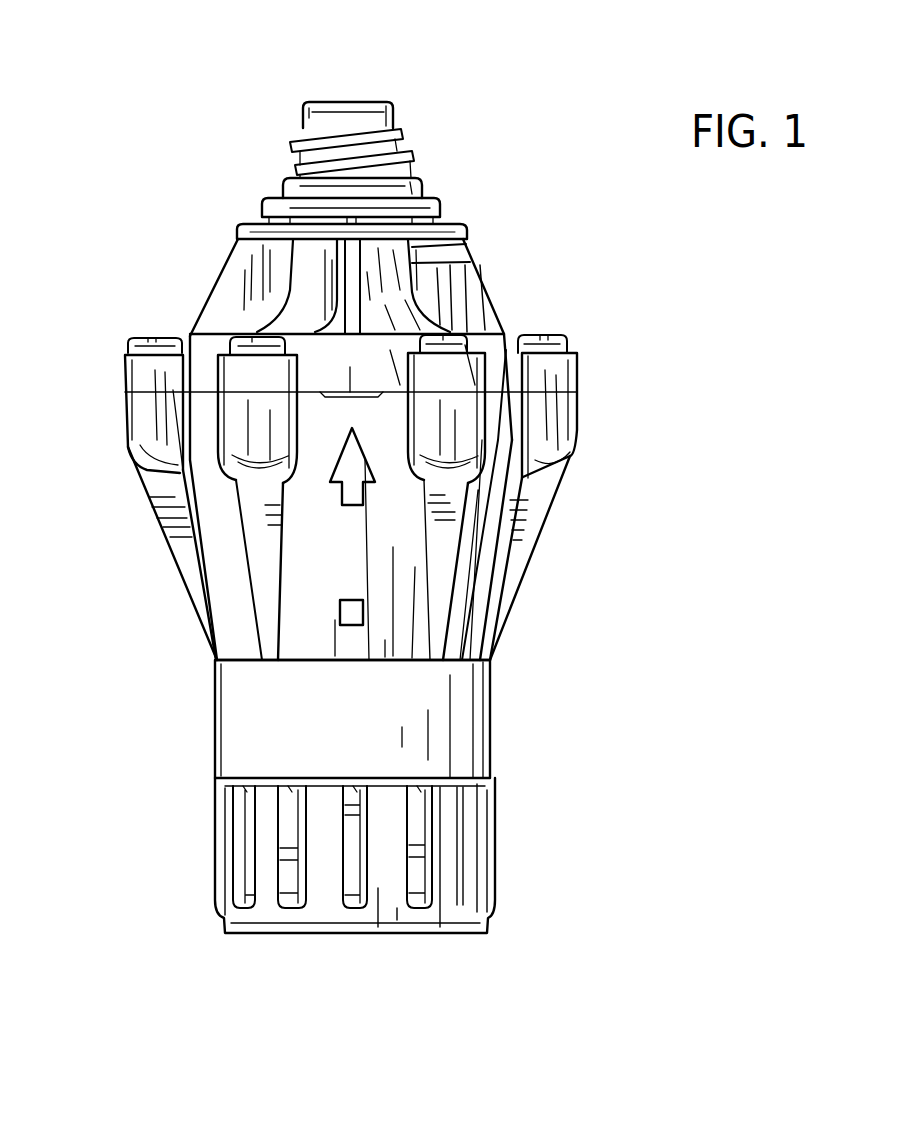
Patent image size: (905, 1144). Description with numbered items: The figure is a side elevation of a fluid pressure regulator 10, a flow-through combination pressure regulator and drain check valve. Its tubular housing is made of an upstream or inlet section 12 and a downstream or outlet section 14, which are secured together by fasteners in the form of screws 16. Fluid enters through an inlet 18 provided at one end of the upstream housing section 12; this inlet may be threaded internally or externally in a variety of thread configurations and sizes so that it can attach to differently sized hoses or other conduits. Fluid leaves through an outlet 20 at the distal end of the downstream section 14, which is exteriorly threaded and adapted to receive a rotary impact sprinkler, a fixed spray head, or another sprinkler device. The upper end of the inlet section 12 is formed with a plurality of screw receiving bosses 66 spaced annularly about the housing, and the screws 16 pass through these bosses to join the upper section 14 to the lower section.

The fluid pressure regulator 10 is at (497, 118).
The upstream or inlet section 12 is at (509, 616).
The downstream or outlet section 14 is at (215, 285).
The screws 16 is at (152, 341).
The inlet 18 is at (329, 933).
The outlet 20 is at (355, 100).
The screw receiving bosses 66 is at (128, 447).